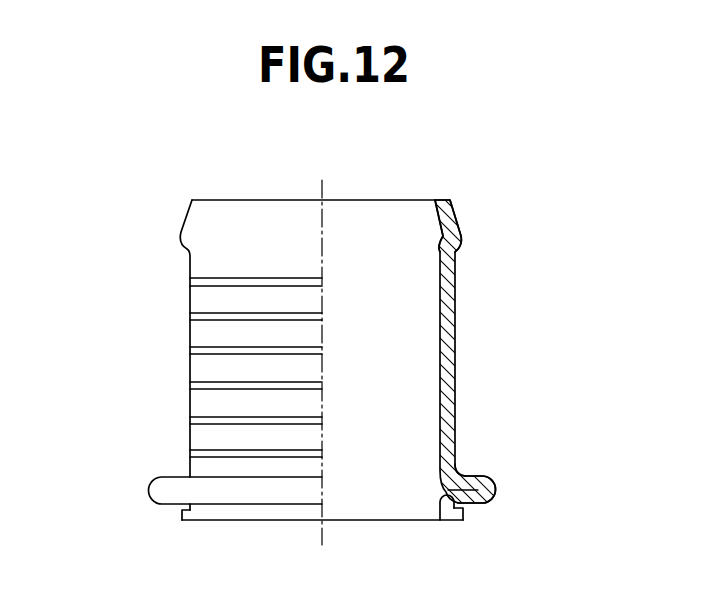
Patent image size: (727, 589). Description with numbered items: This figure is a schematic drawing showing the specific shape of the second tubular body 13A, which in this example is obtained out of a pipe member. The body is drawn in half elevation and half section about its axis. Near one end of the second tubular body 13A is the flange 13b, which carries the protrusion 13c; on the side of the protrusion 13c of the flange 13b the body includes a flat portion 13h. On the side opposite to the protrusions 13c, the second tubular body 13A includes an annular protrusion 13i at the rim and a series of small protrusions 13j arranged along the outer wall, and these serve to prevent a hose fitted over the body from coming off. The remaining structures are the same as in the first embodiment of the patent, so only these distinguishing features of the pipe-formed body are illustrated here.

The second tubular body 13A is at (467, 200).
The annular protrusion 13i is at (462, 235).
The small protrusions 13j is at (190, 349).
The flange 13b is at (482, 468).
The flat portion 13h is at (480, 518).
The protrusion 13c is at (183, 521).